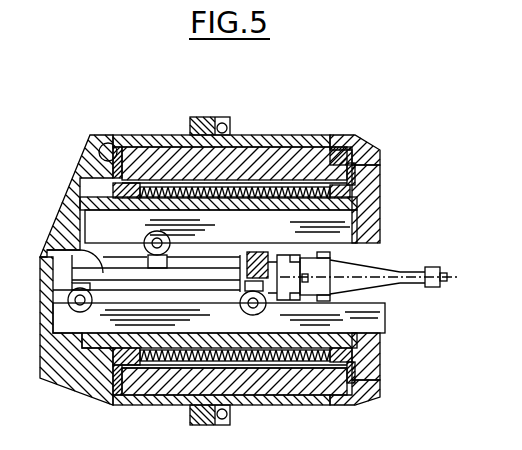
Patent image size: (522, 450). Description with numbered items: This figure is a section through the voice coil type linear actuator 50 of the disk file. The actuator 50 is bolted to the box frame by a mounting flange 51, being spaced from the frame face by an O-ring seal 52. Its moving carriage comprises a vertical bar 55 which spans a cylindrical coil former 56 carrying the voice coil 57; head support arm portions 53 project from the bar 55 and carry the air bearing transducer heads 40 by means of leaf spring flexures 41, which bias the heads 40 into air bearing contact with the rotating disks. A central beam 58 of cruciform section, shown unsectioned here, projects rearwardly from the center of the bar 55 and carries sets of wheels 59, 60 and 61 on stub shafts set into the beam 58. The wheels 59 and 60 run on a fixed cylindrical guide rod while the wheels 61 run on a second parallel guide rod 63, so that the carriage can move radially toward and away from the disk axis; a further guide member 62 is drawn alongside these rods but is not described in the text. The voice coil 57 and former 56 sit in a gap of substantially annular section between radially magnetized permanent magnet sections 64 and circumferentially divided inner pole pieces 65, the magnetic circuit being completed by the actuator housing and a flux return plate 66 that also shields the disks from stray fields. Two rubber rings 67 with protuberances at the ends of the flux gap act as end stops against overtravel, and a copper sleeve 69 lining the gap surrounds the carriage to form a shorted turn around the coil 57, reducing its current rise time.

The air bearing transducer heads 40 is at (432, 267).
The leaf spring flexures 41 is at (385, 287).
The linear actuator 50 is at (90, 400).
The mounting flange 51 is at (205, 117).
The O-ring seal 52 is at (226, 128).
The head support arm portions 53 is at (343, 263).
The vertical bar 55 is at (257, 265).
The cylindrical coil former 56 is at (235, 365).
The voice coil 57 is at (173, 363).
The central beam 58 is at (87, 252).
The wheels 59 is at (250, 312).
The wheels 60 is at (73, 320).
The wheels 61 is at (150, 240).
The lower guide plate 62 is at (388, 333).
The second parallel guide rod 63 is at (378, 208).
The permanent magnet sections 64 is at (303, 200).
The inner pole pieces 65 is at (340, 138).
The flux return plate 66 is at (380, 157).
The rubber rings 67 is at (108, 142).
The copper sleeve 69 is at (292, 365).